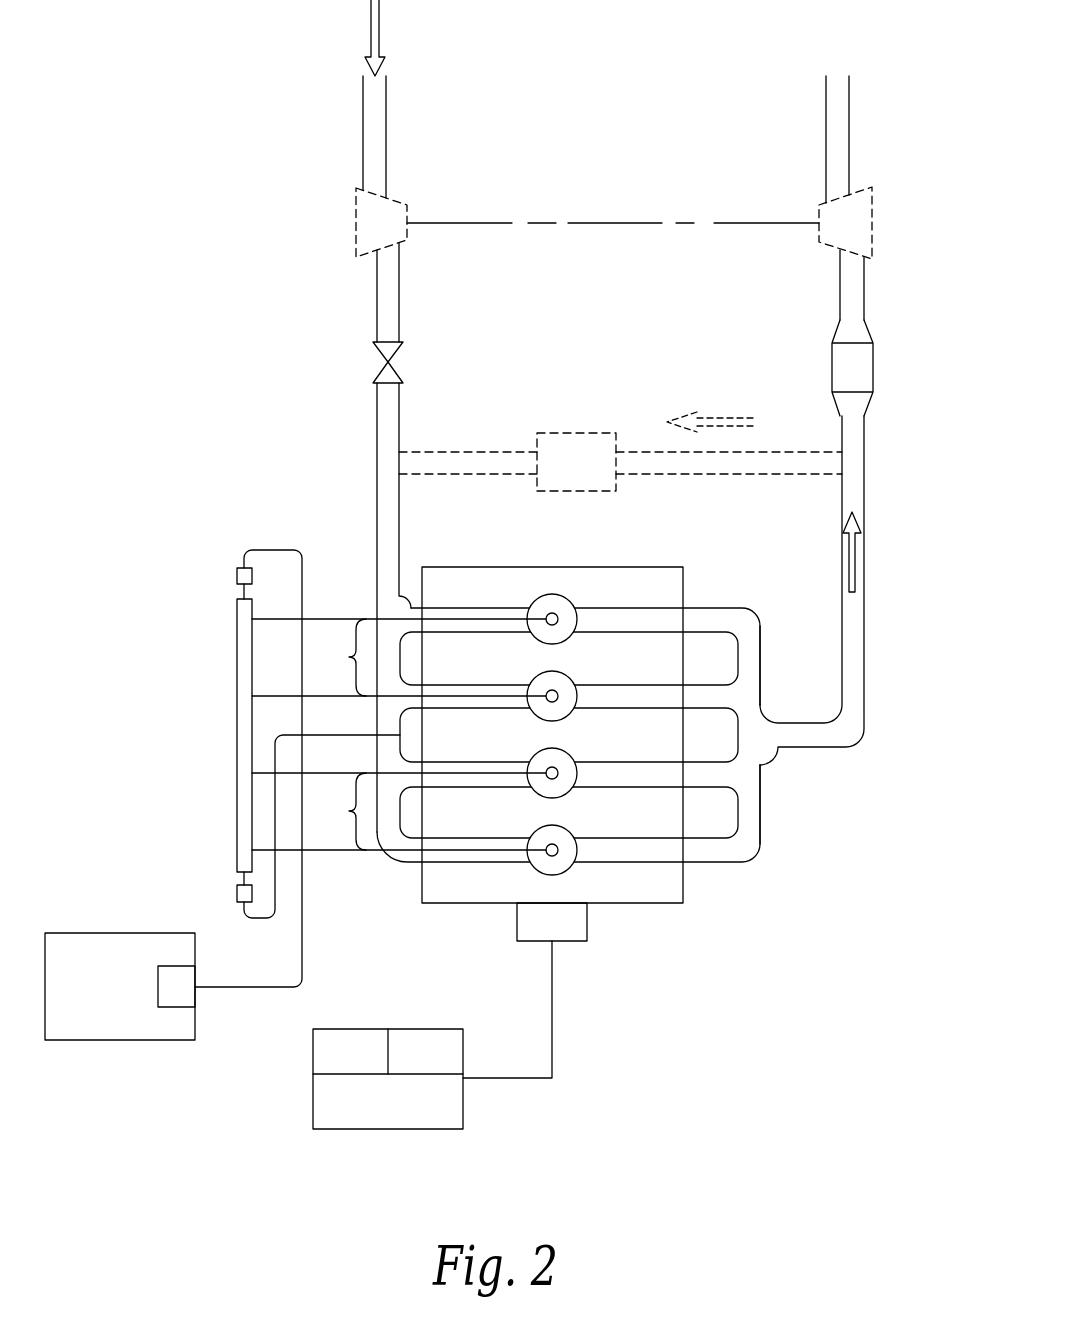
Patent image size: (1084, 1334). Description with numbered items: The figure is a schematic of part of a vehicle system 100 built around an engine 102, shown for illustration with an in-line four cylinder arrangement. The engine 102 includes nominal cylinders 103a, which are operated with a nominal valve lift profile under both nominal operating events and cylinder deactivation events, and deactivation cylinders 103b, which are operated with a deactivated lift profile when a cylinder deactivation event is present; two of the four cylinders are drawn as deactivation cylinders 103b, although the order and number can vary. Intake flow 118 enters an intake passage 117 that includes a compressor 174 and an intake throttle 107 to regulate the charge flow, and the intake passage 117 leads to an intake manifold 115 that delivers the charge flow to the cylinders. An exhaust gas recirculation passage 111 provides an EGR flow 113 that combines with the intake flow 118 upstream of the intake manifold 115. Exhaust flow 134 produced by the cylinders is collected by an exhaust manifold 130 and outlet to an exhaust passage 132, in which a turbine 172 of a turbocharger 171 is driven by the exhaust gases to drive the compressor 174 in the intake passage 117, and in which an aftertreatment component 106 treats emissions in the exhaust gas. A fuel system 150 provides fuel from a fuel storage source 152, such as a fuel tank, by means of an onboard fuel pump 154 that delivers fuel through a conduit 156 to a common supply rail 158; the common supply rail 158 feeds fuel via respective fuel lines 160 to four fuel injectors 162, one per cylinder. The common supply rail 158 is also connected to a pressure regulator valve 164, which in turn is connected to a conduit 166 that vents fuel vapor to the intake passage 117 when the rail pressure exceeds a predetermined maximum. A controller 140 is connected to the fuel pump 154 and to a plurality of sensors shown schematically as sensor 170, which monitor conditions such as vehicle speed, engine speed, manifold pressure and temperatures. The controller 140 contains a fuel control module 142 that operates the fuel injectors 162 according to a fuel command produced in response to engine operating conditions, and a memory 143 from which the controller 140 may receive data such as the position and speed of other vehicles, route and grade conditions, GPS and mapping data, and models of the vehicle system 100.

The vehicle system 100 is at (203, 208).
The engine 102 is at (672, 908).
The nominal cylinders 103a is at (575, 604).
The deactivation cylinders 103b is at (575, 681).
The aftertreatment component 106 is at (873, 358).
The intake throttle 107 is at (384, 362).
The exhaust gas recirculation (EGR) passage 111 is at (491, 451).
The EGR flow 113 is at (706, 418).
The intake manifold 115 is at (393, 866).
The intake passage 117 is at (376, 446).
The intake flow 118 is at (382, 17).
The exhaust manifold 130 is at (762, 810).
The exhaust passage 132 is at (866, 628).
The exhaust flow 134 is at (857, 557).
The controller 140 is at (366, 1138).
The fuel control module 142 is at (443, 1067).
The memory 143 is at (369, 1067).
The fuel system 150 is at (172, 826).
The fuel storage source 152 is at (102, 1041).
The fuel pump 154 is at (175, 1007).
The conduit 156 is at (302, 960).
The common supply rail 158 is at (236, 640).
The fuel lines 160 is at (339, 734).
The fuel injectors 162 is at (550, 613).
The pressure regulator valve 164 is at (236, 893).
The conduit 166 is at (274, 752).
The sensor 170 is at (587, 931).
The turbocharger 171 is at (615, 208).
The turbine 172 is at (872, 222).
The compressor 174 is at (354, 205).